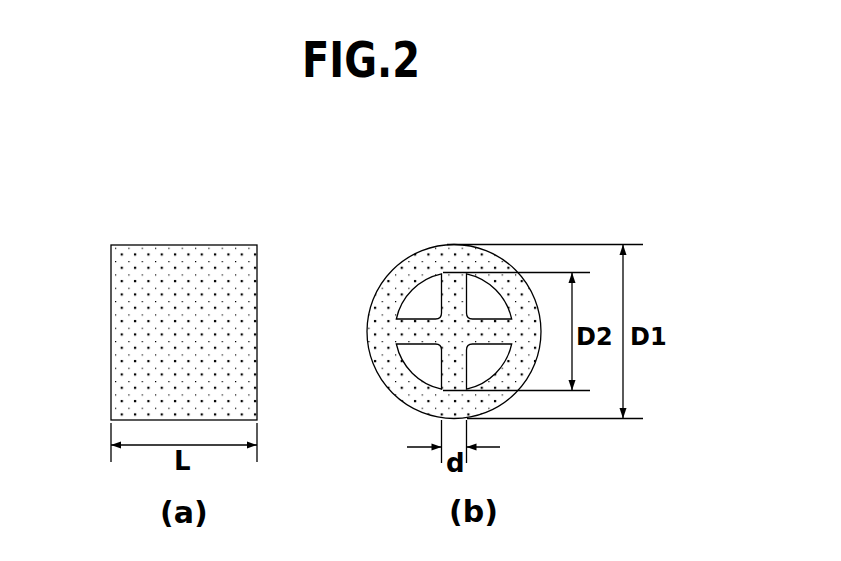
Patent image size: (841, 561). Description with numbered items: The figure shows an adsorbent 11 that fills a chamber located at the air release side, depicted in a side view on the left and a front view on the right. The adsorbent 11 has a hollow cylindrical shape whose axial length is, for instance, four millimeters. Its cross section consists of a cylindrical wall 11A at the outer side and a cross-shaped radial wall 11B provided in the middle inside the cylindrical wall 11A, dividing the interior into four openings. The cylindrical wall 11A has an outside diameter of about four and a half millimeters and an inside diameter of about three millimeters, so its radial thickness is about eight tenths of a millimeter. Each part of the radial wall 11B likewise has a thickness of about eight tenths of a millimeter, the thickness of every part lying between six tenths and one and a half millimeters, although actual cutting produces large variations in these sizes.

The adsorbent 11 is at (210, 223).
The cylindrical wall 11A is at (413, 272).
The cross-shaped radial wall 11B is at (425, 348).